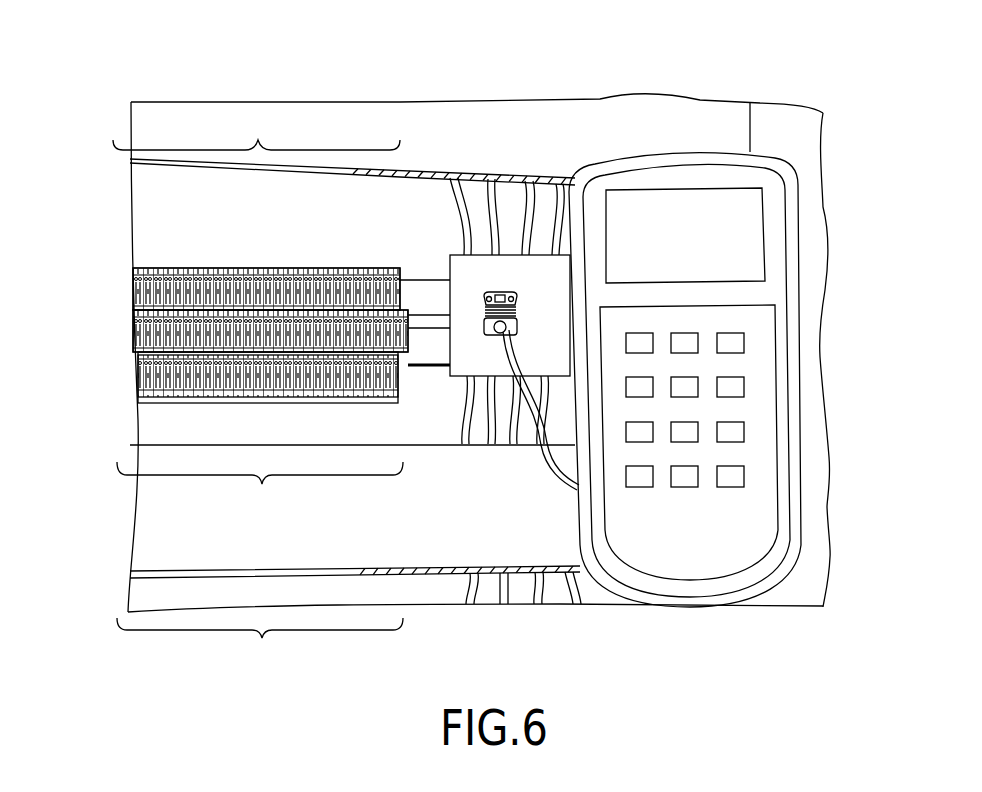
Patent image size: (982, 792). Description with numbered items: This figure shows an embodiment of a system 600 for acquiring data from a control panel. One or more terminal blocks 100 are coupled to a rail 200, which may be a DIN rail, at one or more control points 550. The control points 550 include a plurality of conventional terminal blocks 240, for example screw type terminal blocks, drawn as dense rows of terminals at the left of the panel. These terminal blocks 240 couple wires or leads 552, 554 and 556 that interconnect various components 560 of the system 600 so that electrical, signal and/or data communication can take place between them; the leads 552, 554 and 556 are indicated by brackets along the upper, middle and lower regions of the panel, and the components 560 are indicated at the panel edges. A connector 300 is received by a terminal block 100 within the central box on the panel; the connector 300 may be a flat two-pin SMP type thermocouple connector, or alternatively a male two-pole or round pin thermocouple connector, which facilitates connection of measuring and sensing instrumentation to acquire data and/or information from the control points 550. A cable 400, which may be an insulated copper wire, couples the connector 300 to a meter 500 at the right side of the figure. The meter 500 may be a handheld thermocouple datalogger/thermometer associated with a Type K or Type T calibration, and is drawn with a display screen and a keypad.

The terminal blocks 100 is at (509, 222).
The rail 200 is at (428, 285).
The conventional terminal blocks 240 is at (109, 310).
The connector 300 is at (506, 294).
The cable 400 is at (538, 455).
The meter 500 is at (683, 148).
The control points 550 is at (104, 370).
The wires or leads 552 is at (256, 128).
The wires or leads 554 is at (260, 491).
The wires or leads 556 is at (260, 646).
The components 560 is at (143, 115).
The system 600 is at (208, 682).